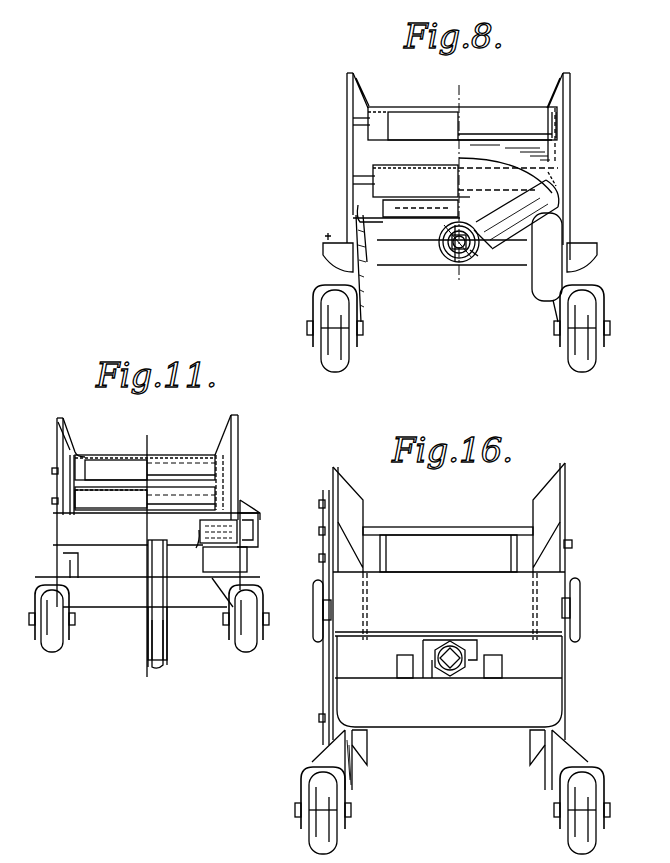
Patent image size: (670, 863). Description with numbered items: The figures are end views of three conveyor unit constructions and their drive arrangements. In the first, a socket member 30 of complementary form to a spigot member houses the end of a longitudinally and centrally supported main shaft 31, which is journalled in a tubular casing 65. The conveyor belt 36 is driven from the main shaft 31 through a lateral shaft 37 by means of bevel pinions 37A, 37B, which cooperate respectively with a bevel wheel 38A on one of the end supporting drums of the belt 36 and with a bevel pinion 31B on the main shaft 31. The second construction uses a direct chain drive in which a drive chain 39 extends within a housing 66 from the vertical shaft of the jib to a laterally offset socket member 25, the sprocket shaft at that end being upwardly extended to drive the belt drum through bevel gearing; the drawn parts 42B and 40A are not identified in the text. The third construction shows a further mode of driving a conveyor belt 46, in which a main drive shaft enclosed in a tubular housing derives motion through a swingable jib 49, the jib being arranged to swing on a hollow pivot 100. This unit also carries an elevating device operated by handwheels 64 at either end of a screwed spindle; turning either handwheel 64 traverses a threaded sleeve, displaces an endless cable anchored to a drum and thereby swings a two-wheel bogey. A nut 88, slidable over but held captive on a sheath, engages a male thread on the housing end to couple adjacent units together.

In FIG. 8, the conveyor belt 36 is at (418, 167).
In FIG. 8, the bevel wheel 38A is at (560, 126).
In FIG. 8, the lateral shaft 37 is at (506, 196).
In FIG. 8, the bevel pinion 37A is at (566, 180).
In FIG. 8, the main shaft 31 is at (441, 240).
In FIG. 8, the bevel pinion 31B is at (447, 256).
In FIG. 8, the socket member 30 is at (470, 254).
In FIG. 8, the bevel pinion 37B is at (480, 248).
In FIG. 8, the tubular casing 65 is at (452, 273).
In FIG. 11, the rail end 42B is at (240, 500).
In FIG. 11, the drive chain 39 is at (200, 530).
In FIG. 11, the housing 66 is at (197, 541).
In FIG. 11, the bracket 40A is at (258, 536).
In FIG. 11, the laterally offset socket member 25 is at (232, 560).
In FIG. 16, the conveyor belt 46 is at (437, 540).
In FIG. 16, the handwheel 64 is at (314, 612).
In FIG. 16, the hollow pivot 100 is at (478, 643).
In FIG. 16, the nut 88 is at (445, 668).
In FIG. 16, the swingable jib 49 is at (418, 679).